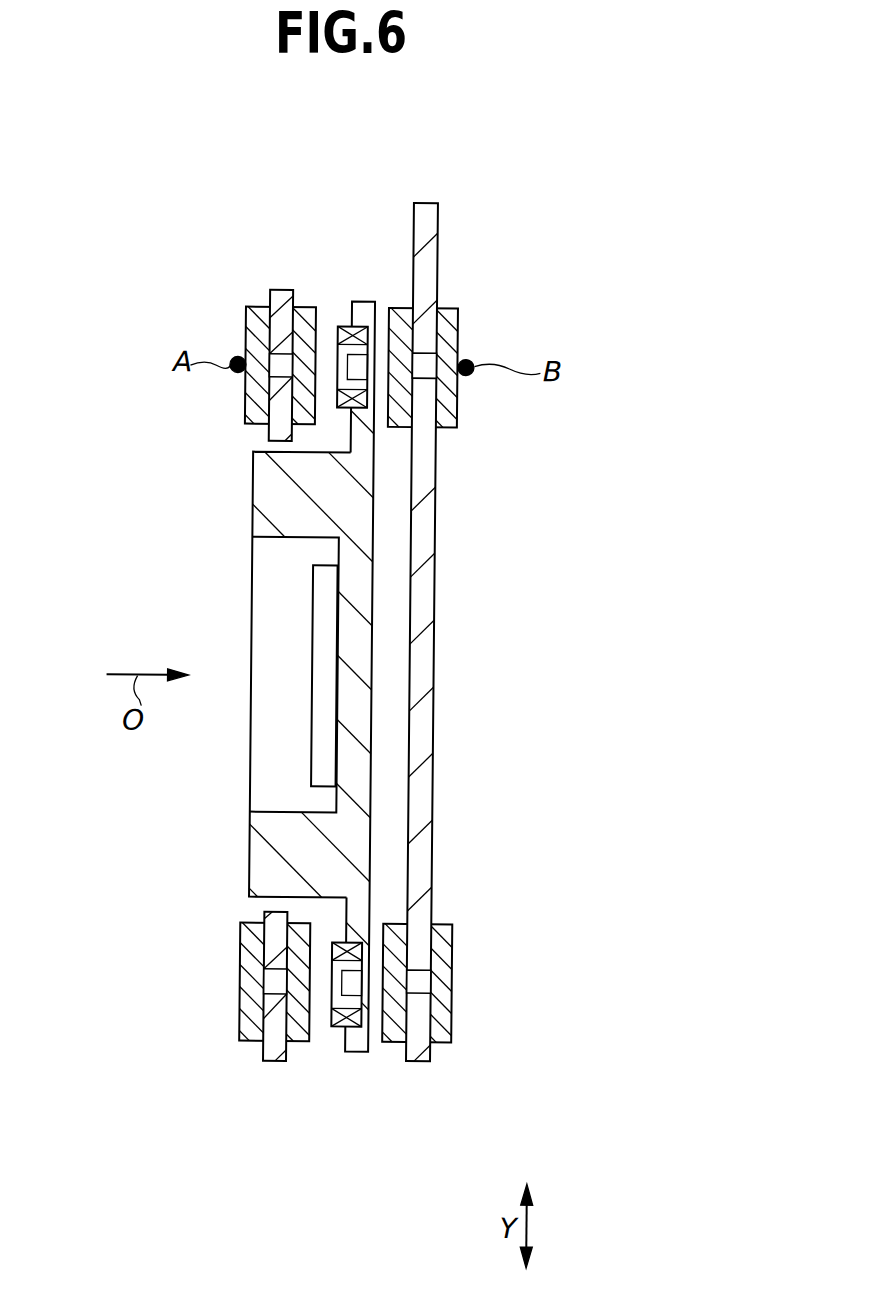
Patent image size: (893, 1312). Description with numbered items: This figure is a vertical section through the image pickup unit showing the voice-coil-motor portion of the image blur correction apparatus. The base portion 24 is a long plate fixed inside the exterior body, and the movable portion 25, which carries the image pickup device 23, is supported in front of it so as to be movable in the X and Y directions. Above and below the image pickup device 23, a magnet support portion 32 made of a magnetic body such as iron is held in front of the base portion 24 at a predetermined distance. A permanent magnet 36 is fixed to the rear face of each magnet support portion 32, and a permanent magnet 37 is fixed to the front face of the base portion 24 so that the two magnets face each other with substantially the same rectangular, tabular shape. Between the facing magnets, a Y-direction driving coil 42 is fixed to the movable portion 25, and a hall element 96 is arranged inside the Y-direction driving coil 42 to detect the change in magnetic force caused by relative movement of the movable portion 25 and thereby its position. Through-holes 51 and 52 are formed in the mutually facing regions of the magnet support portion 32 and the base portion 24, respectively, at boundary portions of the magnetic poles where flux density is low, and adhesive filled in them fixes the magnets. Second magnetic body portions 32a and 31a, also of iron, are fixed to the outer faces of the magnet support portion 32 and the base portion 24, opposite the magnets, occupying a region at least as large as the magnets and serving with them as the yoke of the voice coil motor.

The image pickup device 23 is at (313, 617).
The base portion 24 is at (434, 662).
The movable portion 25 is at (252, 510).
The second magnetic body portion 31a is at (455, 401).
The magnet support portion 32 is at (279, 293).
The second magnetic body portion 32a is at (243, 318).
The permanent magnet 36 is at (307, 308).
The permanent magnet 37 is at (390, 310).
The Y-direction driving coil 42 is at (328, 330).
The through-hole 51 is at (270, 367).
The through-hole 52 is at (430, 360).
The hall element 96 is at (354, 348).